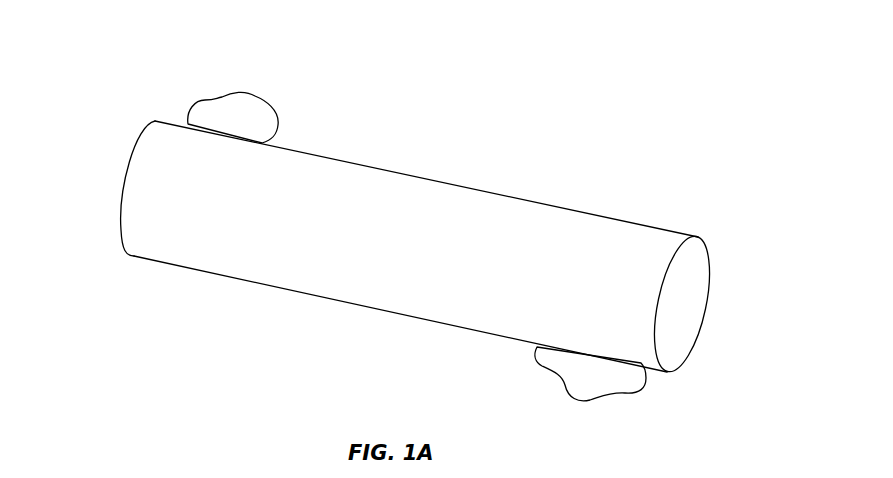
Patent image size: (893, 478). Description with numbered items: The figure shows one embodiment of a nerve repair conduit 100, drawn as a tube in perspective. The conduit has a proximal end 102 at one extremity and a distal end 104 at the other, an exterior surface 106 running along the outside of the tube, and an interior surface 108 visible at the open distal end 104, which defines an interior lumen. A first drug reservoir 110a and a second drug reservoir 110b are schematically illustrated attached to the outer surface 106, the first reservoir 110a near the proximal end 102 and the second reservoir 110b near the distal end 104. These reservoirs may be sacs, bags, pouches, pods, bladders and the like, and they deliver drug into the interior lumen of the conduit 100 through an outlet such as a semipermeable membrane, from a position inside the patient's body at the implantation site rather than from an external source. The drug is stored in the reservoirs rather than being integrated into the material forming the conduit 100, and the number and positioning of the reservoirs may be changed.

The nerve repair conduit 100 is at (410, 225).
The proximal end 102 is at (112, 193).
The distal end 104 is at (717, 304).
The exterior surface 106 is at (535, 222).
The interior surface 108 is at (690, 278).
The first drug reservoir 110a is at (213, 113).
The second drug reservoir 110b is at (605, 380).